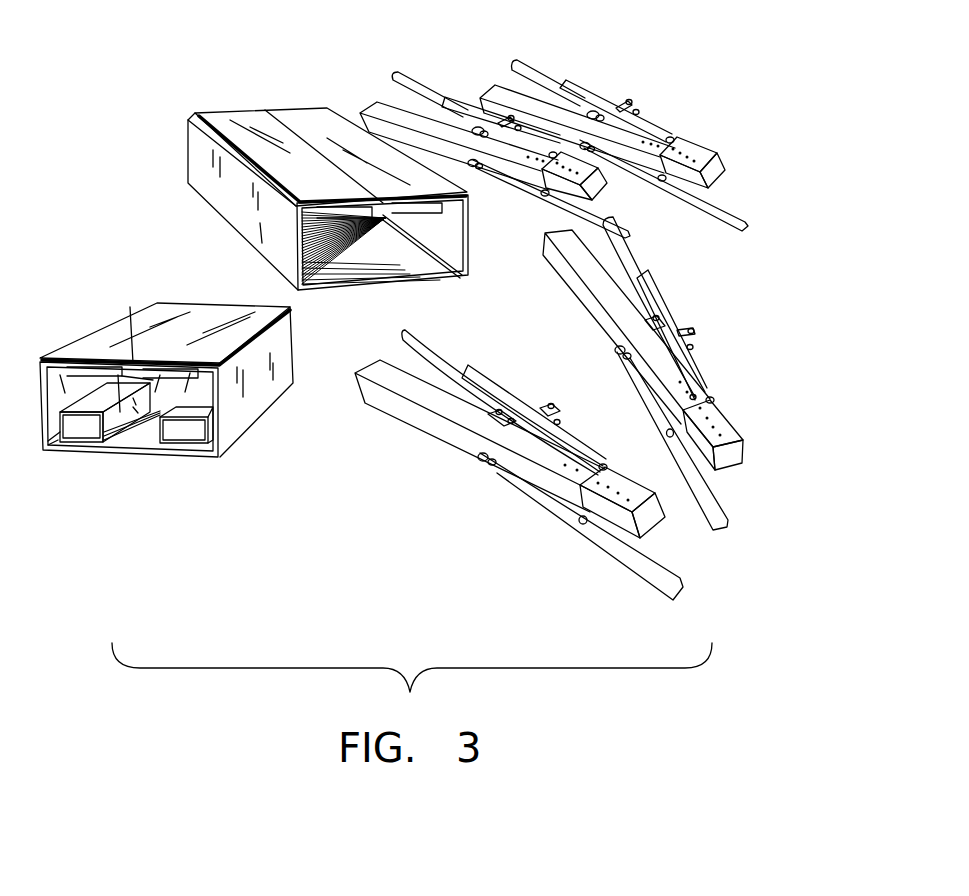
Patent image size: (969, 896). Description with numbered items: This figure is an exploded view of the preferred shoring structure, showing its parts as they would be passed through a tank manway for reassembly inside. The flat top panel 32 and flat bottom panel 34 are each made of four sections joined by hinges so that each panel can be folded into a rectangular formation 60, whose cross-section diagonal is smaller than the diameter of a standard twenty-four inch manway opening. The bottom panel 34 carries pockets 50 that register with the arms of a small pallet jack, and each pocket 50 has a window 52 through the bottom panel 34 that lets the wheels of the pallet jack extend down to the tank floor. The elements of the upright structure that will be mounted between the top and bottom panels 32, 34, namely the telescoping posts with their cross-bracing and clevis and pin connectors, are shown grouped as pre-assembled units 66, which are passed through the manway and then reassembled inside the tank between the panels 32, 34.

The top panel 32 is at (242, 110).
The bottom panel 34 is at (172, 302).
The pockets 50 is at (140, 447).
The window 52 is at (193, 427).
The rectangular formation 60 is at (80, 256).
The pre-assembled units 66 is at (577, 108).